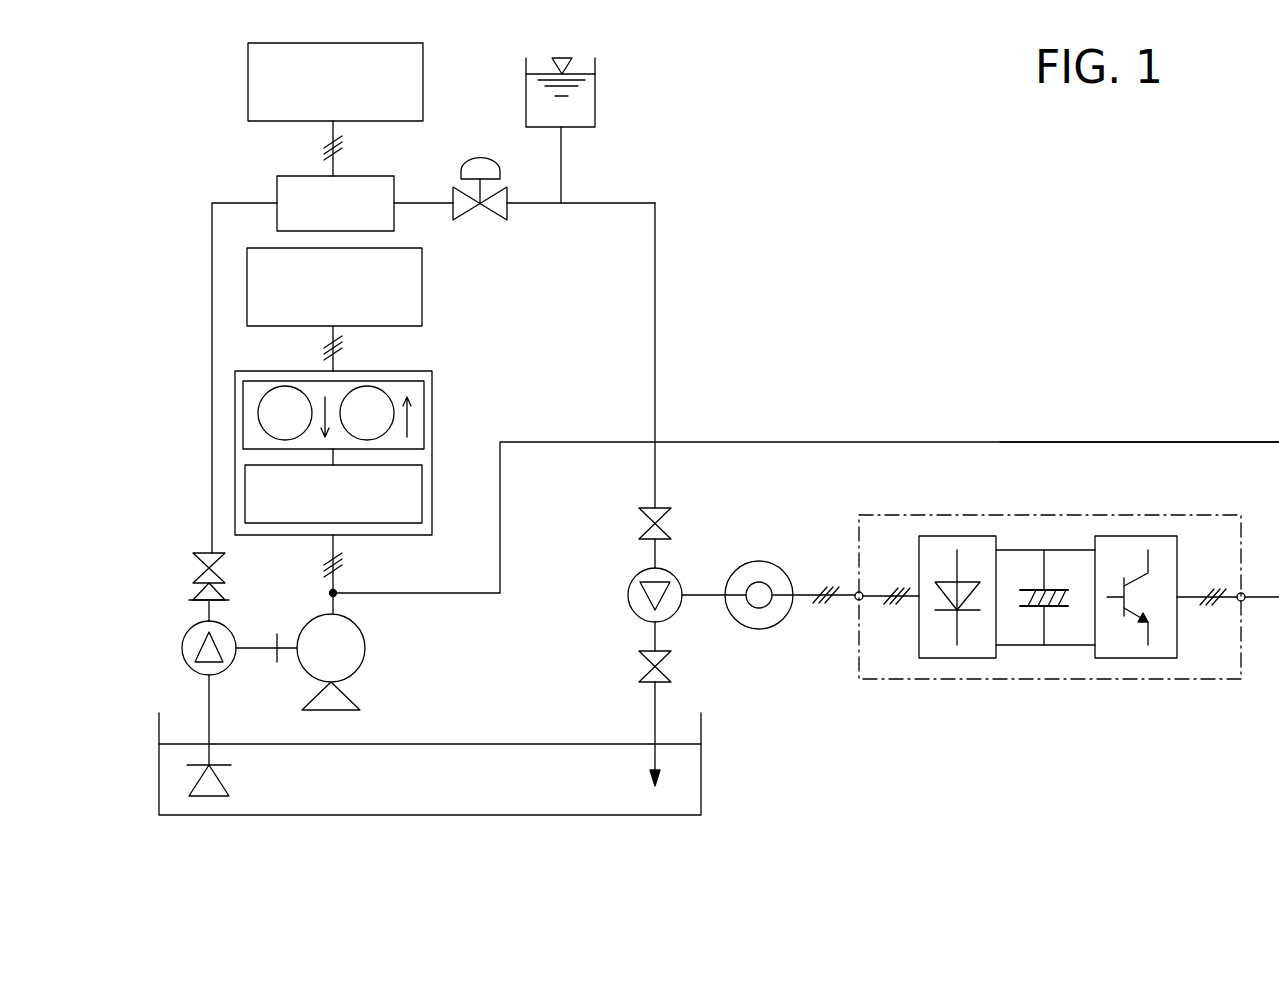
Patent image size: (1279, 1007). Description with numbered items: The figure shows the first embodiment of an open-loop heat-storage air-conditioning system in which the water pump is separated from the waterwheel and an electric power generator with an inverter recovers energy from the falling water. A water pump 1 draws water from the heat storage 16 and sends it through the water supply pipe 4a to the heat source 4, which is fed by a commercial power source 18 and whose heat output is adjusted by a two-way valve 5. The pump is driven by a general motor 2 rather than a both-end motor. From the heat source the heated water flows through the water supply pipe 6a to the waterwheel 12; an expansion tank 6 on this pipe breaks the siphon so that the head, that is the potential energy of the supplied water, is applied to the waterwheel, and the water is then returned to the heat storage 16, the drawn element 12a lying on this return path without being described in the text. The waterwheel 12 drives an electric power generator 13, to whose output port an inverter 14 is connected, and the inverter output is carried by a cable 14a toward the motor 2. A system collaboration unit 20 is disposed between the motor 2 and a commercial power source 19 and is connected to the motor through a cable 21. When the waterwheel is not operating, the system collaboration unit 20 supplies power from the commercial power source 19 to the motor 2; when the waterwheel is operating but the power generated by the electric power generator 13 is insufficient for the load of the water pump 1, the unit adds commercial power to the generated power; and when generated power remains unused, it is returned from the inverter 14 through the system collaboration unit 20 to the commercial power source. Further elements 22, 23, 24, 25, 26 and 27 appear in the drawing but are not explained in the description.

The water pump 1 is at (182, 648).
The motor 2 is at (358, 672).
The heat source 4 is at (394, 186).
The water supply pipe 4a is at (205, 694).
The two-way valve 5 is at (489, 158).
The expansion tank 6 is at (595, 88).
The water supply pipe 6a is at (655, 278).
The waterwheel 12 is at (674, 611).
The pipe 12a is at (650, 712).
The electric power generator 13 is at (751, 561).
The inverter 14 is at (1046, 680).
The cable 14a is at (1026, 442).
The heat storage 16 is at (313, 815).
The commercial power source 18 is at (423, 48).
The commercial power source 19 is at (422, 265).
The system collaboration unit 20 is at (432, 388).
The cable 21 is at (340, 601).
The wire 22 is at (330, 335).
The check valve 23 is at (200, 598).
The valve 24 is at (212, 558).
The strainer 25 is at (228, 783).
The valve 26 is at (637, 522).
The valve 27 is at (638, 670).